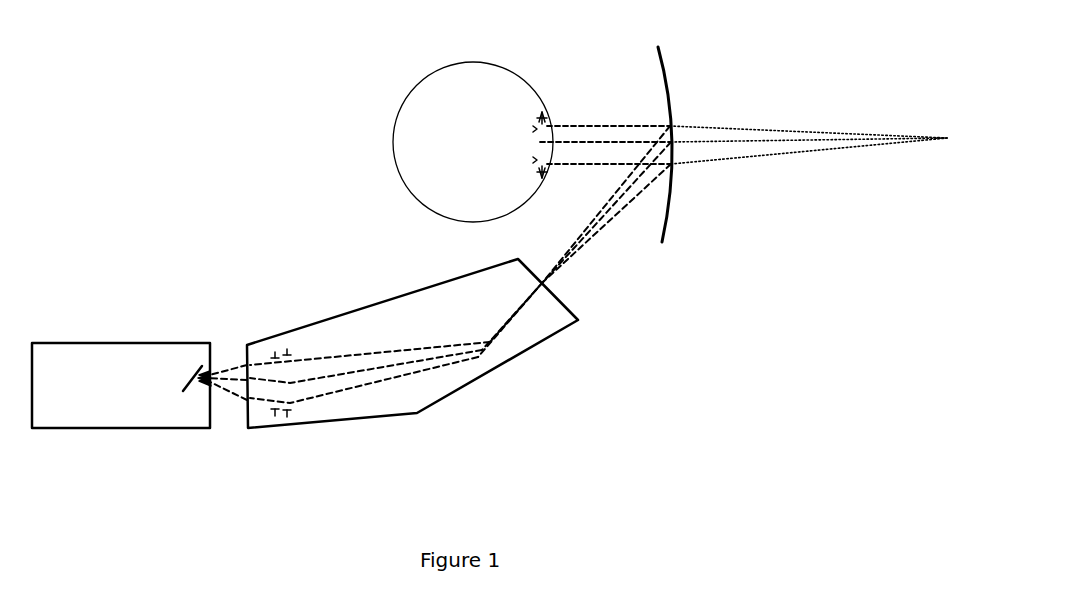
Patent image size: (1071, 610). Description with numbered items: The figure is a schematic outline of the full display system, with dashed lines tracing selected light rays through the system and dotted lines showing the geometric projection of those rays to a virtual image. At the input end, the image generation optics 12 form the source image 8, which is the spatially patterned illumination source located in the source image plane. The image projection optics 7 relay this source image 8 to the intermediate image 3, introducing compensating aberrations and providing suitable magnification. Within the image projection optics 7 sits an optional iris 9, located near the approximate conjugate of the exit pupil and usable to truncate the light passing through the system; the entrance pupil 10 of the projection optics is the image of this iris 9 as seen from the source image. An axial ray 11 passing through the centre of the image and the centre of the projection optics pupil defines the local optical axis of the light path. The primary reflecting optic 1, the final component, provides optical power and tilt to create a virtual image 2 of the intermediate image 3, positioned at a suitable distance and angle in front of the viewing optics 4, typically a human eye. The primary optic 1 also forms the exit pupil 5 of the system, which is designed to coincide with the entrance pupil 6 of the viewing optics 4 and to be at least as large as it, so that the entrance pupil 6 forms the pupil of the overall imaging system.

The primary reflecting optic 1 is at (672, 202).
The virtual image 2 is at (945, 133).
The intermediate image 3 is at (568, 262).
The viewing optics 4 is at (425, 132).
The exit pupil of the system 5 is at (546, 112).
The entrance pupil 6 is at (535, 127).
The image projection optics 7 is at (382, 323).
The source image 8 is at (188, 393).
The iris 9 is at (275, 412).
The entrance pupil of the image projection optics 10 is at (289, 415).
The axial ray 11 is at (232, 378).
The image generation optics 12 is at (112, 367).